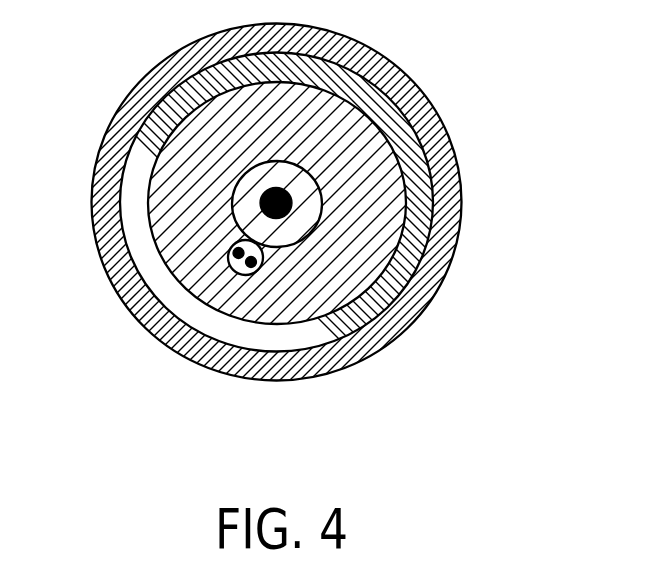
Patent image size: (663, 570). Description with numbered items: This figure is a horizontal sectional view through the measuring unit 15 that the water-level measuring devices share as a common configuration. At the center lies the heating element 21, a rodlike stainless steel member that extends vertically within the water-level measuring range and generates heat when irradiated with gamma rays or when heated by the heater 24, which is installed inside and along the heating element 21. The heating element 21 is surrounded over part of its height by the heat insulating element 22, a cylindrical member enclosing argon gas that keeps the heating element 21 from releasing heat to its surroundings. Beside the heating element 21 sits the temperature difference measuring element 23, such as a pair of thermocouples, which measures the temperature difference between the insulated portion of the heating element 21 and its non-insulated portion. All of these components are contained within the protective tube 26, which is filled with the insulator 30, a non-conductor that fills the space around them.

The measuring unit 15 is at (331, 228).
The heating element 21 is at (238, 182).
The heat insulating element 22 is at (432, 164).
The temperature difference measuring element 23 is at (227, 255).
The heater 24 is at (278, 217).
The protective tube 26 is at (392, 67).
The insulator 30 is at (408, 227).